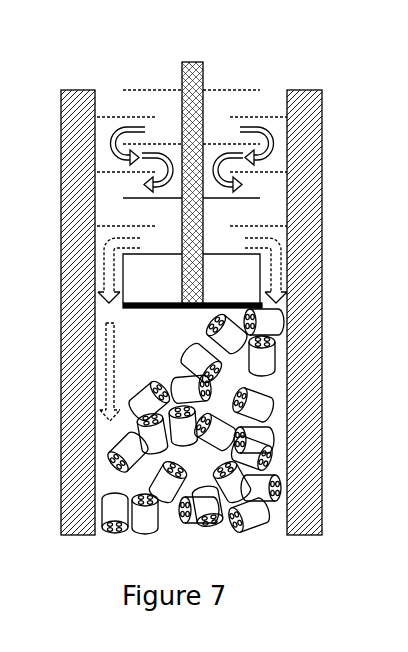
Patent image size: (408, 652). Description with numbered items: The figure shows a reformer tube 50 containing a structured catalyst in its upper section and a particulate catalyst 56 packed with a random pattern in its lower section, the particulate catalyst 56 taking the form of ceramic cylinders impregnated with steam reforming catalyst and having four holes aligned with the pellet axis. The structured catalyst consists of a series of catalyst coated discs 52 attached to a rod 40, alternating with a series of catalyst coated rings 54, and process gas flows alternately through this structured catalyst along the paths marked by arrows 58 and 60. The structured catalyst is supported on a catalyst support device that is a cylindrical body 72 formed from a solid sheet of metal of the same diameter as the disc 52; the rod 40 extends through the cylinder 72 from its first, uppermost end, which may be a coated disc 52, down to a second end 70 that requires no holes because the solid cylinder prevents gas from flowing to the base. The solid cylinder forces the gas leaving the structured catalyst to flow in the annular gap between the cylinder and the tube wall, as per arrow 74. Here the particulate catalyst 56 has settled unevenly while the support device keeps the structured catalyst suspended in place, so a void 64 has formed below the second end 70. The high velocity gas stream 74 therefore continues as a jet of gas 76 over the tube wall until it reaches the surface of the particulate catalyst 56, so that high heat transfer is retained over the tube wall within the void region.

The rod 40 is at (203, 72).
The reformer tube 50 is at (322, 170).
The catalyst coated disc 52 is at (137, 90).
The catalyst coated ring 54 is at (113, 116).
The particulate catalyst 56 is at (105, 453).
The process gas flow arrow 58 is at (105, 143).
The process gas flow arrow 60 is at (140, 178).
The void 64 is at (133, 358).
The second end 70 is at (253, 283).
The cylindrical body 72 is at (123, 267).
The annular gap flow arrow 74 is at (105, 254).
The jet of gas 76 is at (105, 347).